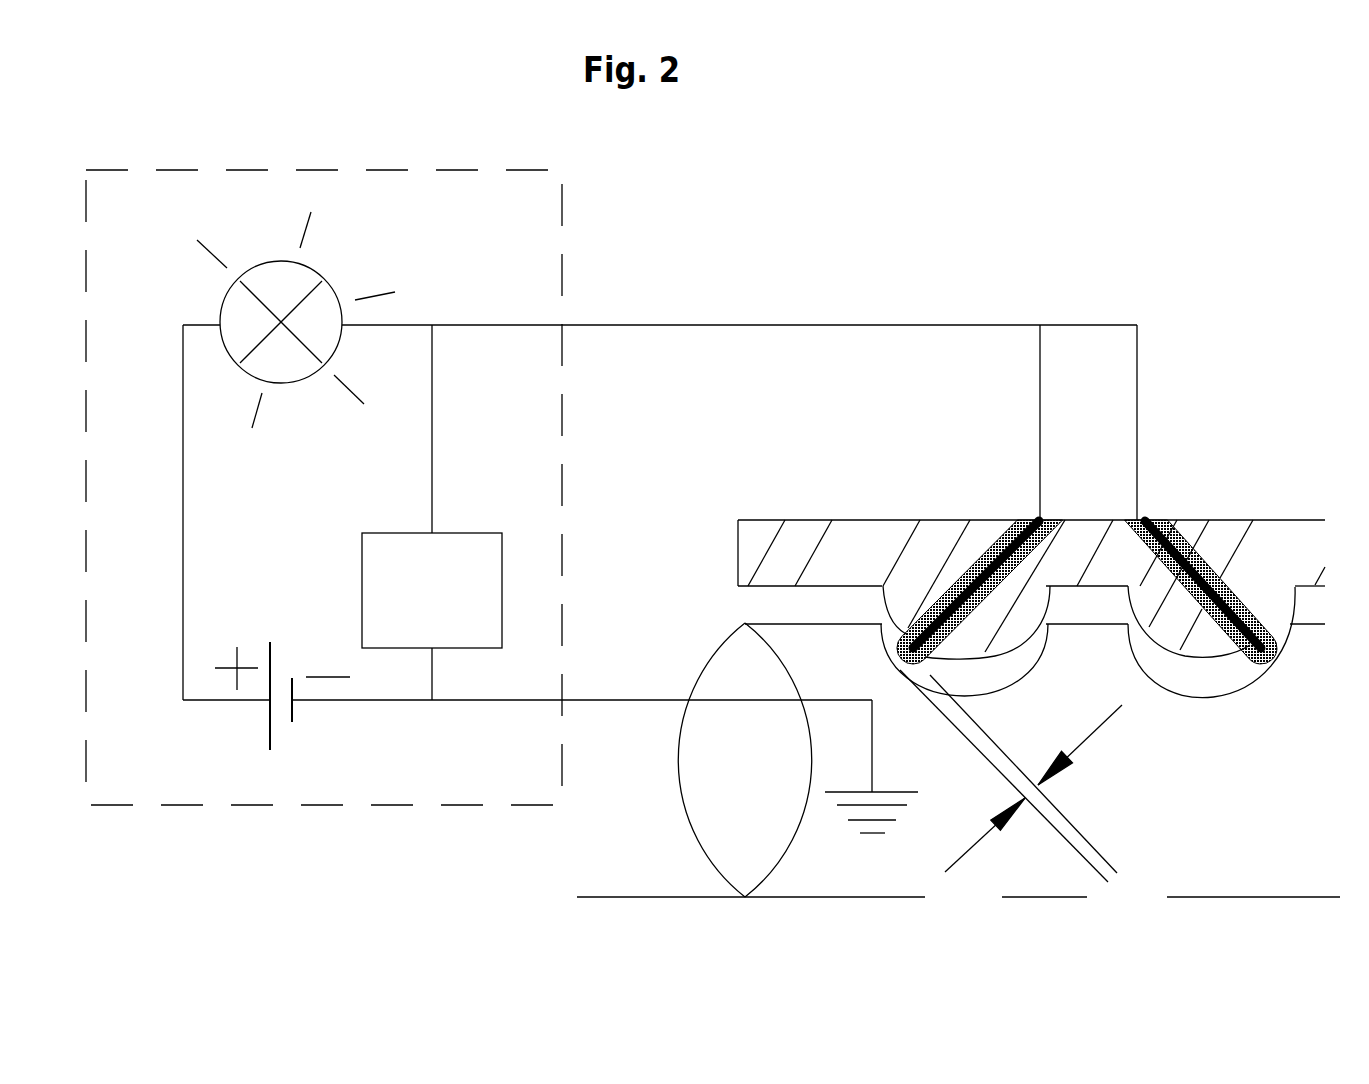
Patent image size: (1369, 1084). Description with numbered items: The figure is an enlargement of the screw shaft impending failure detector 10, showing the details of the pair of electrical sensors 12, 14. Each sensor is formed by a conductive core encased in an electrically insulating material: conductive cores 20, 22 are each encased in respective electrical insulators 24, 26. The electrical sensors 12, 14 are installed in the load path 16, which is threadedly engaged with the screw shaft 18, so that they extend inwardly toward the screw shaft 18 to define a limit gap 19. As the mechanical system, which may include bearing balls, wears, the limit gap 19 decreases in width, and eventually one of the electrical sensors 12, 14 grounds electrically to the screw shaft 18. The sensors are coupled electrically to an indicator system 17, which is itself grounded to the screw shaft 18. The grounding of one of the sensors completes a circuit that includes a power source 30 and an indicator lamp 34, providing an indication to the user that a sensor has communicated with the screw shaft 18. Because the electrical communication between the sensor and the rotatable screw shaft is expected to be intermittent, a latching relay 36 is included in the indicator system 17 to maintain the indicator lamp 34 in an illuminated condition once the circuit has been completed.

The screw shaft impending failure detector 10 is at (487, 908).
The electrical sensor 12 is at (1015, 575).
The electrical sensor 14 is at (1250, 607).
The load path 16 is at (763, 537).
The indicator system 17 is at (540, 232).
The screw shaft 18 is at (747, 668).
The limit gap 19 is at (1122, 705).
The conductive core 20 is at (1015, 520).
The conductive core 22 is at (1180, 520).
The electrical insulator 24 is at (967, 580).
The electrical insulator 26 is at (1207, 560).
The power source 30 is at (268, 723).
The indicator lamp 34 is at (226, 304).
The relay 36 is at (400, 548).